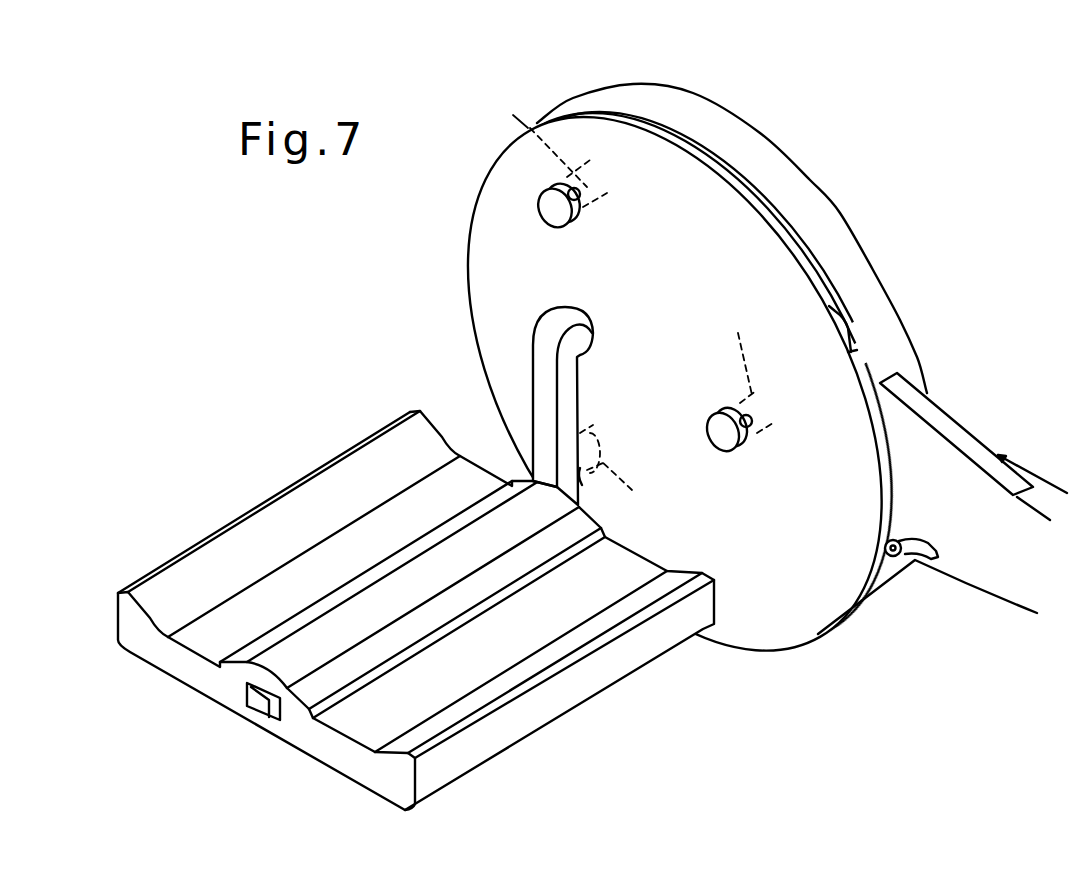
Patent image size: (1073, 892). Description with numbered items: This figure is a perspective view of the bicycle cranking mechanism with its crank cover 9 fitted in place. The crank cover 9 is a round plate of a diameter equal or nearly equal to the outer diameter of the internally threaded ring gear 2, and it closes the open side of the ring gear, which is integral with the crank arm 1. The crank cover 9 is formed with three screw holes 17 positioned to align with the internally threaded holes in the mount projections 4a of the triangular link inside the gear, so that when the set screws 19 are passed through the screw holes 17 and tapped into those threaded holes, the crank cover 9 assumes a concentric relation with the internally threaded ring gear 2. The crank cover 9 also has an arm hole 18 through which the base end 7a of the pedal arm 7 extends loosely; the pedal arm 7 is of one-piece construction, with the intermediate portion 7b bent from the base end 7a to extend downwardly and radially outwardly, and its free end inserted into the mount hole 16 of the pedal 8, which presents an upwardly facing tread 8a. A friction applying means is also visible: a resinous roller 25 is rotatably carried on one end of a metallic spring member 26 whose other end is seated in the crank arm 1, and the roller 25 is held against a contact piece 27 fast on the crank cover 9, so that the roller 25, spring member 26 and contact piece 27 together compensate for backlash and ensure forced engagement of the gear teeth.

The crank arm 1 is at (963, 450).
The internally threaded ring gear 2 is at (862, 283).
The mount projections 4a is at (630, 302).
The pedal arm 7 is at (533, 383).
The base end 7a is at (553, 323).
The intermediate portion 7b is at (568, 405).
The pedal 8 is at (416, 588).
The tread 8a is at (267, 530).
The crank cover 9 is at (772, 253).
The mount hole 16 is at (270, 708).
The screw holes 17 is at (583, 198).
The arm hole 18 is at (565, 323).
The set screws 19 is at (552, 208).
The roller 25 is at (897, 557).
The spring member 26 is at (930, 560).
The contact piece 27 is at (858, 327).